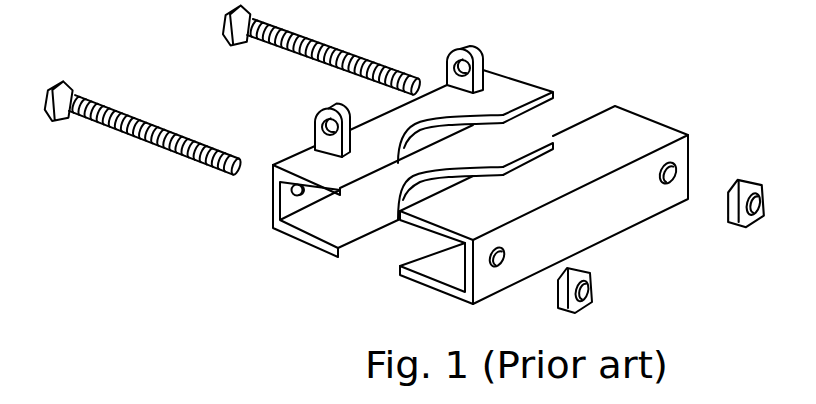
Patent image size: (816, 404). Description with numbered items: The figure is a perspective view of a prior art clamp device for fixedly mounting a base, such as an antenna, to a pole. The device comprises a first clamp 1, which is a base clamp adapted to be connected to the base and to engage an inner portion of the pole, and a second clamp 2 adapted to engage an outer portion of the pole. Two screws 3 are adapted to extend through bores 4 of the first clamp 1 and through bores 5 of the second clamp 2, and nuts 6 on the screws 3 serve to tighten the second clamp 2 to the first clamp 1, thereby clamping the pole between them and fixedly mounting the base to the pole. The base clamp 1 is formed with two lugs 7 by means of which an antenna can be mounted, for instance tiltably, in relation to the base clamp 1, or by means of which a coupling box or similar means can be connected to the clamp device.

The first clamp 1 is at (530, 81).
The second clamp 2 is at (544, 218).
The screws 3 is at (172, 160).
The bores 4 is at (293, 186).
The bores 5 is at (501, 268).
The nuts 6 is at (593, 280).
The lugs 7 is at (485, 53).